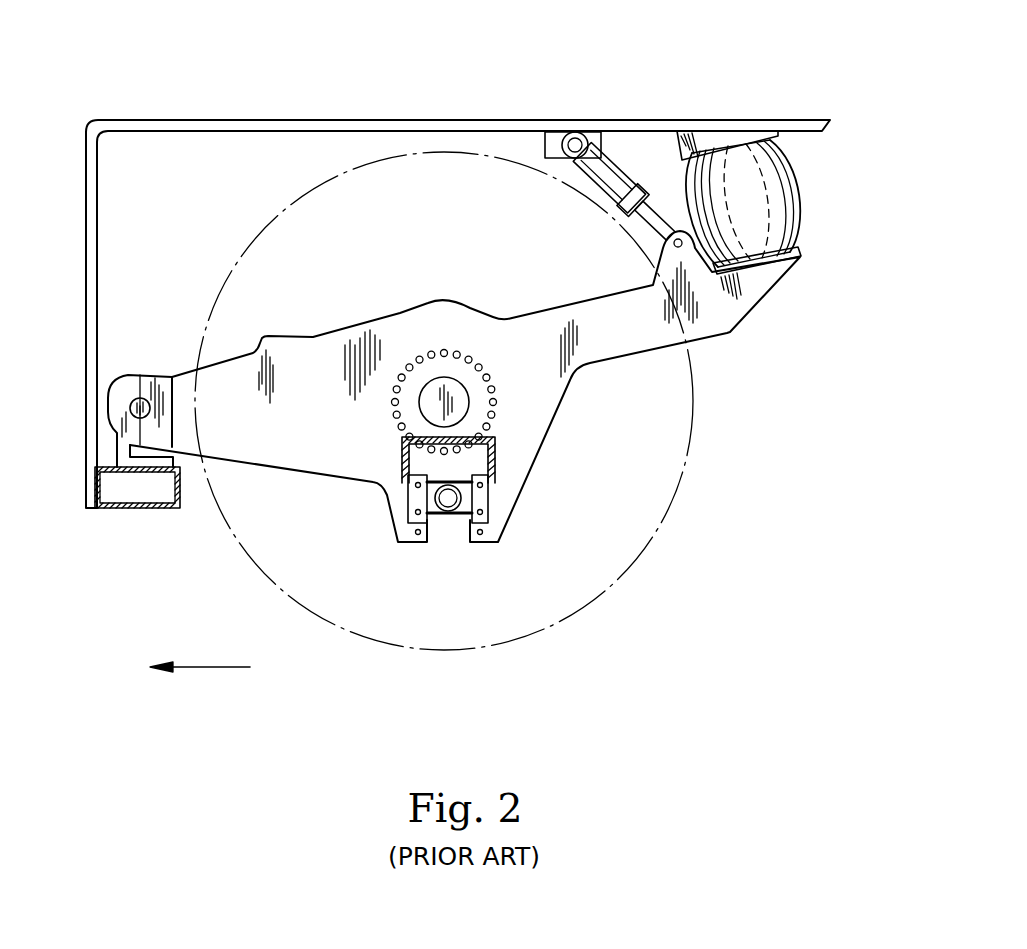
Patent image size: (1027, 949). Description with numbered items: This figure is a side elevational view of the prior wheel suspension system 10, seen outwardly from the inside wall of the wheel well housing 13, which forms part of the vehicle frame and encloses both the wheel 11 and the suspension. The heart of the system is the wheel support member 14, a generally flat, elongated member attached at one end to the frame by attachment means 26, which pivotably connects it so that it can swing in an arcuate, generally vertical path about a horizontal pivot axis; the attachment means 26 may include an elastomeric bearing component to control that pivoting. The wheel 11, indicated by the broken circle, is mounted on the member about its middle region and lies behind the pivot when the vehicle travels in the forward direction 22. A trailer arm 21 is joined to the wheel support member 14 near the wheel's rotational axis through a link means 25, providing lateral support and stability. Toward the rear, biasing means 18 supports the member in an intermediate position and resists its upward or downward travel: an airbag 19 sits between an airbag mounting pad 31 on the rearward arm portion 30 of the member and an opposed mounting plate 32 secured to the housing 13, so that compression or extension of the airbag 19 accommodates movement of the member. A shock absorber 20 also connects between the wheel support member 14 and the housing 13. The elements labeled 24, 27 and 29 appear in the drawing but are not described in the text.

The wheel suspension system 10 is at (417, 427).
The wheel 11 is at (267, 578).
The wheel well housing 13 is at (230, 118).
The wheel support member 14 is at (465, 404).
The biasing means 18 is at (774, 222).
The airbag 19 is at (748, 177).
The shock absorber 20 is at (612, 163).
The trailer arm 21 is at (443, 520).
The forward direction 22 is at (207, 670).
The bearing bracket 24 is at (497, 470).
The link means 25 is at (468, 548).
The attachment means 26 is at (104, 386).
The stop cushion 27 is at (117, 508).
The pivot pin 29 is at (130, 407).
The rearward arm portion 30 is at (685, 327).
The airbag mounting pad 31 is at (763, 302).
The mounting plate 32 is at (715, 137).